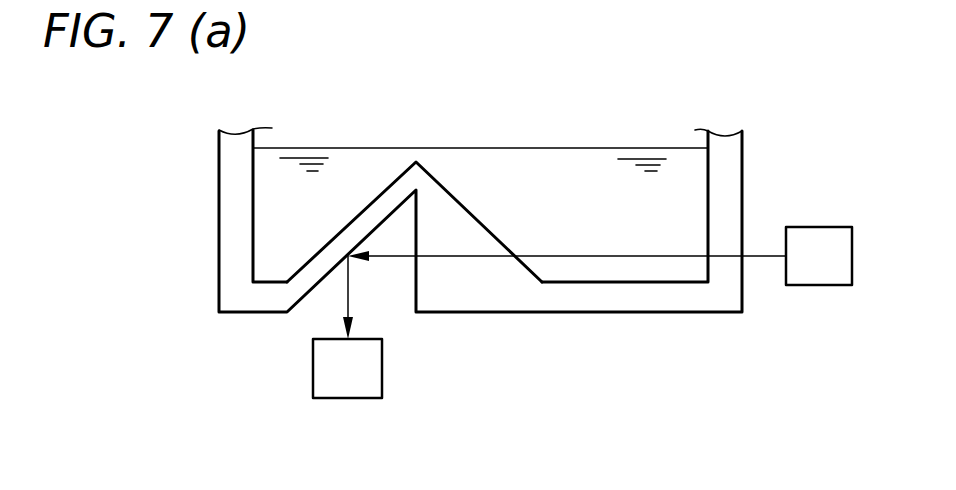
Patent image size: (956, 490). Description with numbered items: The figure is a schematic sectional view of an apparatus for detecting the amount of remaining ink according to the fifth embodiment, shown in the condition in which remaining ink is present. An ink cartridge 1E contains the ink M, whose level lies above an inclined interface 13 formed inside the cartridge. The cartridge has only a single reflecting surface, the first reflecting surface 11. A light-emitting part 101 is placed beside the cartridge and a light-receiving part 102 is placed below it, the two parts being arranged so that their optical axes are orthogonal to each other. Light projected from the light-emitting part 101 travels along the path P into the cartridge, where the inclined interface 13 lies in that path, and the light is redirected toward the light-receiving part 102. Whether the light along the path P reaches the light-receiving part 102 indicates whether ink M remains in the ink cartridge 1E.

The ink cartridge 1E is at (531, 231).
The first reflecting surface 11 is at (320, 288).
The inclined interface 13 is at (449, 189).
The processing liquid M is at (653, 148).
The path P is at (459, 257).
The light-emitting part 101 is at (820, 285).
The light-receiving part 102 is at (348, 398).